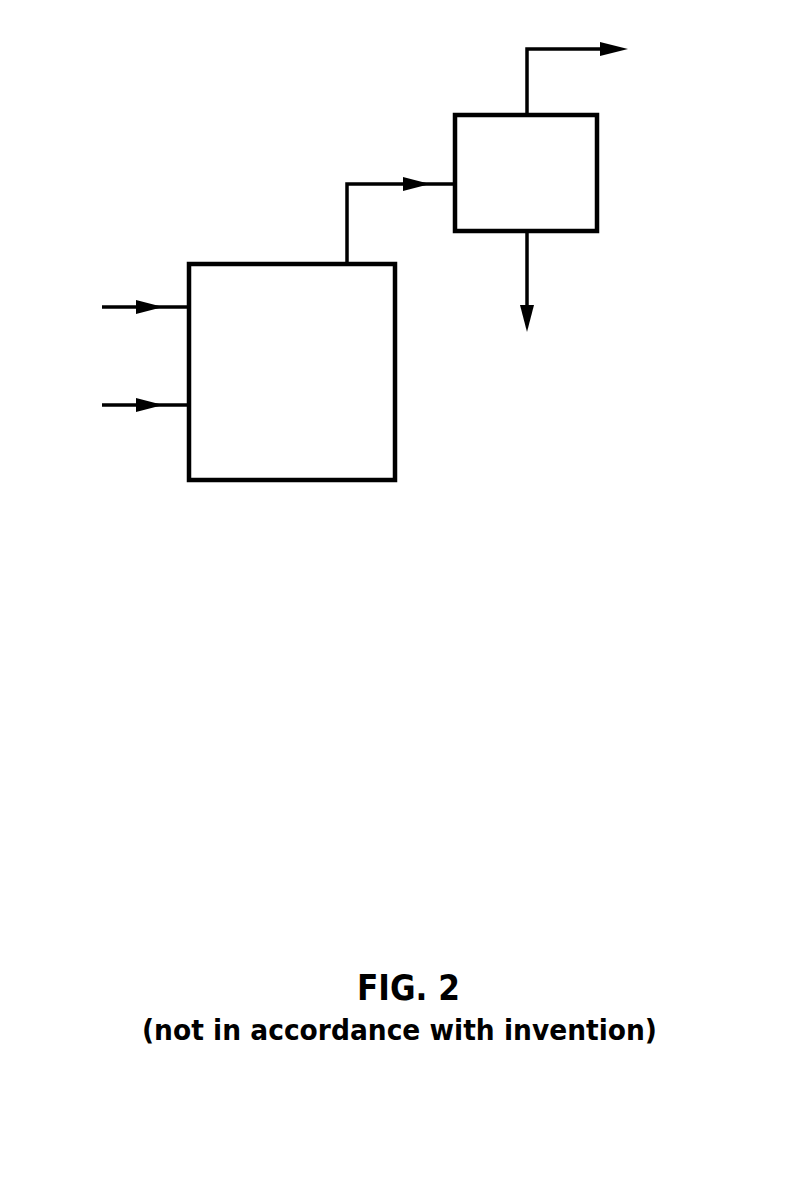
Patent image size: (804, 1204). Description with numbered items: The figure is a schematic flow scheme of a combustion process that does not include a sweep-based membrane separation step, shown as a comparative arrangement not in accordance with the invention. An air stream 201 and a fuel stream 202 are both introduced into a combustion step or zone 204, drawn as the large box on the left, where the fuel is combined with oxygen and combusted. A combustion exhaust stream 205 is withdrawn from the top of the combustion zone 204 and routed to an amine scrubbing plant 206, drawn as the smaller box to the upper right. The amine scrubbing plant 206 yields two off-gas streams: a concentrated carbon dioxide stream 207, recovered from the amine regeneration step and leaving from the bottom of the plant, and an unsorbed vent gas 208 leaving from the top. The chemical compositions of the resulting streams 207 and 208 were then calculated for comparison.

The air stream 201 is at (114, 407).
The fuel stream 202 is at (114, 309).
The combustion step or zone 204 is at (237, 264).
The combustion exhaust stream 205 is at (401, 207).
The amine scrubbing plant 206 is at (597, 172).
The concentrated carbon dioxide stream 207 is at (427, 303).
The unsorbed vent gas 208 is at (608, 75).